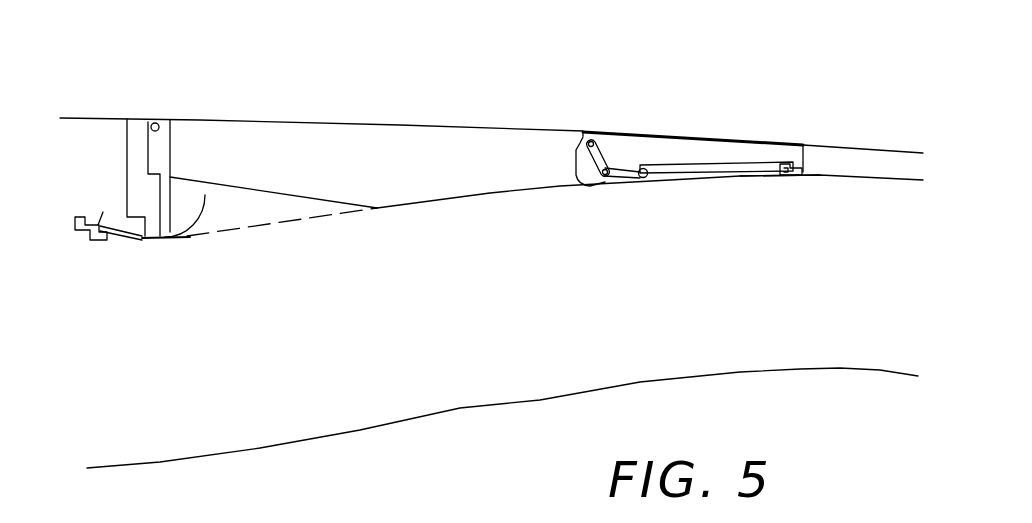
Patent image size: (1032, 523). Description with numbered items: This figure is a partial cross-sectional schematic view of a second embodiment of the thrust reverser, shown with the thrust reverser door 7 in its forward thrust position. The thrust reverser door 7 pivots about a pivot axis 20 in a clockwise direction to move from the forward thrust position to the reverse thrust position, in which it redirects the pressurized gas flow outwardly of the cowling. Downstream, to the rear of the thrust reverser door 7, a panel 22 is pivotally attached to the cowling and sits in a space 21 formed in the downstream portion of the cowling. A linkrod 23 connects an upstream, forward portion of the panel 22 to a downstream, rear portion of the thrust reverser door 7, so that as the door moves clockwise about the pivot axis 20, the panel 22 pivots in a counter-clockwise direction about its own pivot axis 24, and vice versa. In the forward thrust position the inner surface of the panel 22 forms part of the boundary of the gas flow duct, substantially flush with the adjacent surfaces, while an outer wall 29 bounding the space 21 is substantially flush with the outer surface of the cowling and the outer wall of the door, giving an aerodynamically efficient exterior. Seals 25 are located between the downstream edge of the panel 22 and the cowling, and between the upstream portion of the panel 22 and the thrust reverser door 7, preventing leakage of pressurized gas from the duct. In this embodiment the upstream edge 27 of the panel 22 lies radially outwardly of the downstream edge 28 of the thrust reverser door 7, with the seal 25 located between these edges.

The thrust reverser door 7 is at (303, 137).
The pivot axis 20 is at (462, 241).
The space 21 is at (728, 155).
The panel 22 is at (712, 174).
The linkrod 23 is at (590, 184).
The pivot axis 24 is at (768, 203).
The seal 25 is at (806, 168).
The upstream edge 27 is at (638, 160).
The downstream edge 28 is at (636, 190).
The outer wall 29 is at (754, 132).